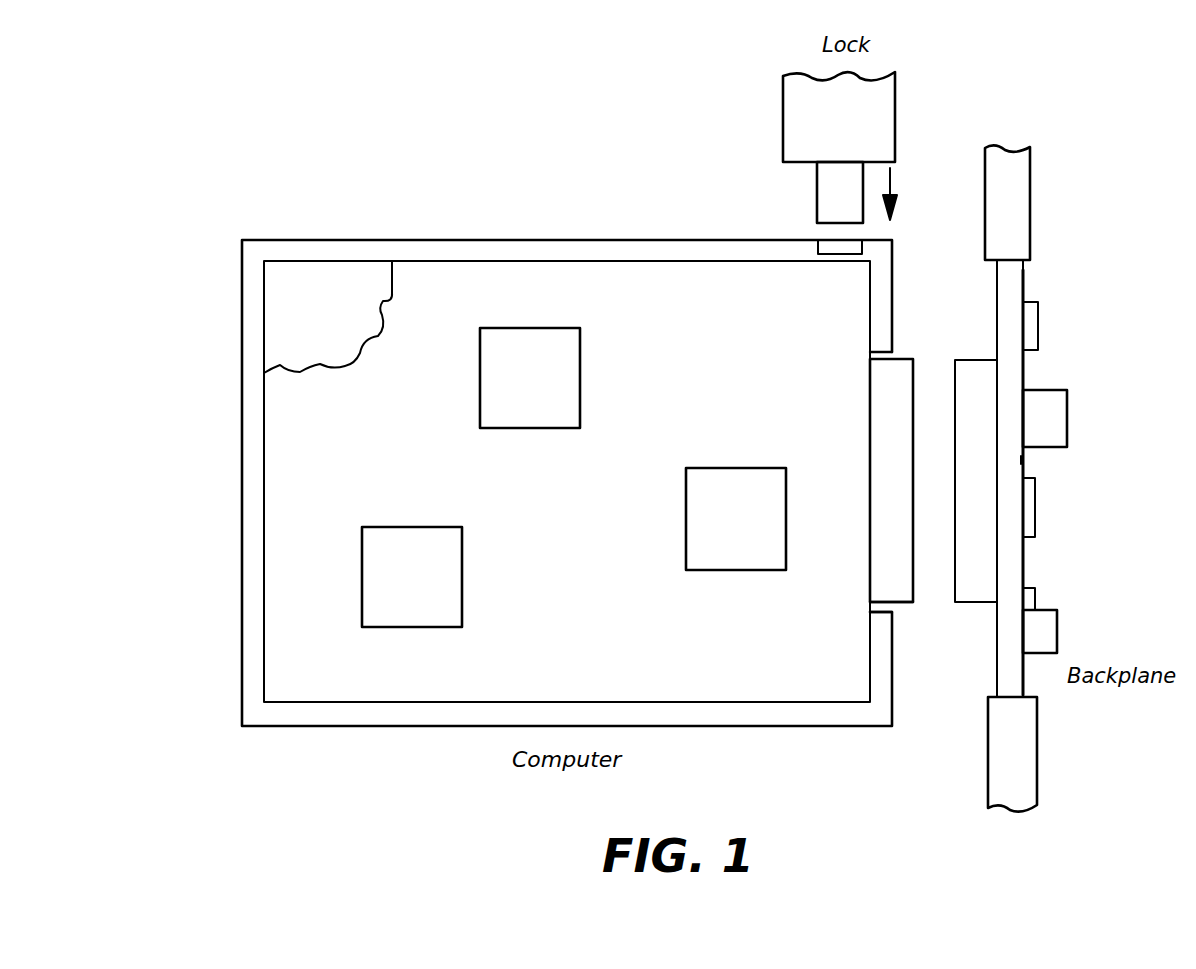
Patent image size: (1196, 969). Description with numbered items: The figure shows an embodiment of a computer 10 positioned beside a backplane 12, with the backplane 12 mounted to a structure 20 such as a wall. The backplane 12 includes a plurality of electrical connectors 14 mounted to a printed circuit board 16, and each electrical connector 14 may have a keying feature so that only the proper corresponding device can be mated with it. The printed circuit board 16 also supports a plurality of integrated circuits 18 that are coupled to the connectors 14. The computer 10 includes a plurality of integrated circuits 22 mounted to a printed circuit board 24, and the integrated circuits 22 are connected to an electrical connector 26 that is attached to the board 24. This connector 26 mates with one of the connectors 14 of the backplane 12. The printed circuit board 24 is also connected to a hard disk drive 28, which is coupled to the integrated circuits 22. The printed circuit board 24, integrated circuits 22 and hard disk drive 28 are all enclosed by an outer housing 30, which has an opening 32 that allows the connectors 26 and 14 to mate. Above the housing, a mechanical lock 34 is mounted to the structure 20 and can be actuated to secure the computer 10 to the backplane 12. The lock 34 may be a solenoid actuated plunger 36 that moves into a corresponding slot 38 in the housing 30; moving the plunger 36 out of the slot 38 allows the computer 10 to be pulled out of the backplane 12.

The computer 10 is at (307, 495).
The backplane 12 is at (1020, 370).
The electrical connector 14 is at (977, 377).
The printed circuit board 16 is at (1020, 460).
The integrated circuit 18 is at (1027, 510).
The structure 20 is at (1013, 177).
The integrated circuit 22 is at (517, 365).
The printed circuit board 24 is at (574, 561).
The electrical connector 26 is at (900, 558).
The hard disk drive 28 is at (312, 303).
The outer housing 30 is at (257, 620).
The opening 32 is at (878, 608).
The mechanical lock 34 is at (863, 112).
The solenoid actuated plunger 36 is at (817, 190).
The slot 38 is at (840, 247).